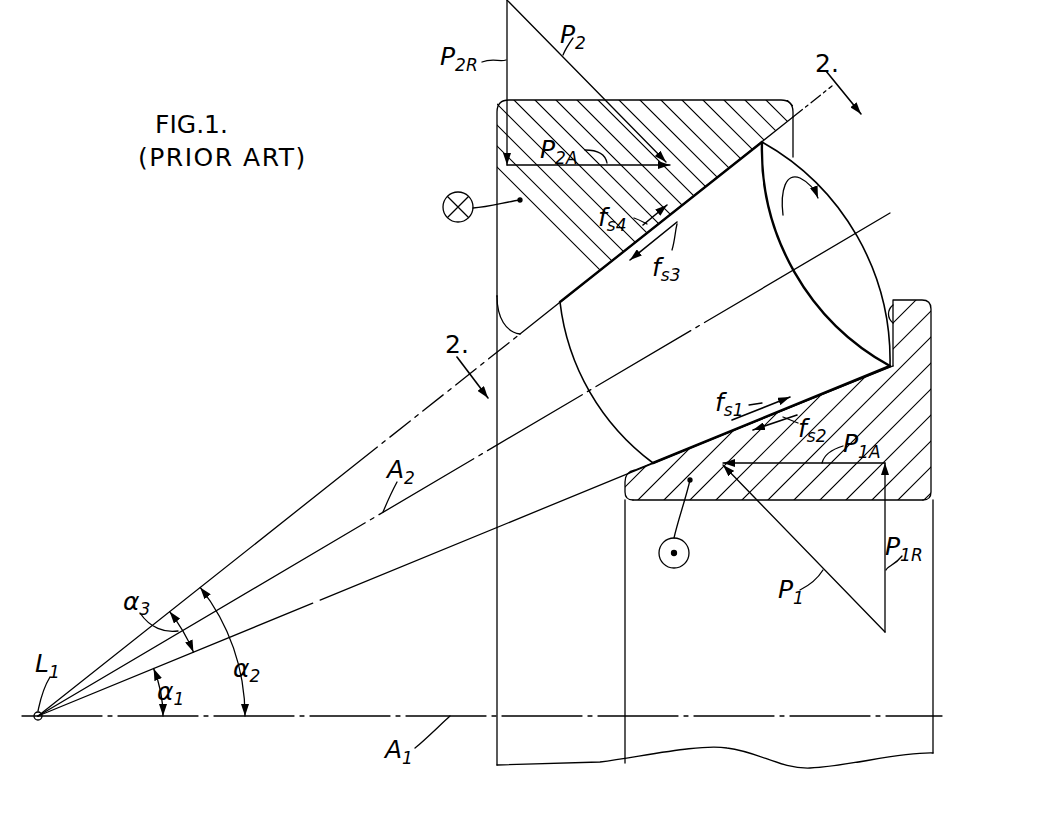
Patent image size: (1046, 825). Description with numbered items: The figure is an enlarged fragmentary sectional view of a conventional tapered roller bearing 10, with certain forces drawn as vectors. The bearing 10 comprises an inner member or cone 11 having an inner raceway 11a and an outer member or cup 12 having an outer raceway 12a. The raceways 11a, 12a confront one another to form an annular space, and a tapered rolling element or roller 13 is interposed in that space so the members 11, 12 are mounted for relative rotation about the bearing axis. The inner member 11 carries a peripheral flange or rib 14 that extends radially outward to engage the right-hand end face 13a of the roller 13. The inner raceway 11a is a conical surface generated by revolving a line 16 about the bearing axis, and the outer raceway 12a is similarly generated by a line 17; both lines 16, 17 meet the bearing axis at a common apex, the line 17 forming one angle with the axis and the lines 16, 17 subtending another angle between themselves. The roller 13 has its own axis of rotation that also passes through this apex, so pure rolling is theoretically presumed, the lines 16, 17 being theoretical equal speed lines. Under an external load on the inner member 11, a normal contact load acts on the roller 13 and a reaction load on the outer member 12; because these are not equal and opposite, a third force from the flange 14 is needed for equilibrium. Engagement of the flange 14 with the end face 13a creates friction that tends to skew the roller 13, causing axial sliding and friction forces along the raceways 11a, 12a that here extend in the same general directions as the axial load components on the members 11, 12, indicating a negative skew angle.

The tapered roller bearing 10 is at (738, 291).
The inner member or cone 11 is at (641, 500).
The inner raceway 11a is at (817, 391).
The outer member or cup 12 is at (690, 85).
The outer raceway 12a is at (731, 170).
The rolling element or roller 13 is at (682, 390).
The right-hand end face 13a is at (890, 300).
The peripheral flange or rib 14 is at (905, 300).
The line 16 is at (390, 572).
The line 17 is at (282, 522).